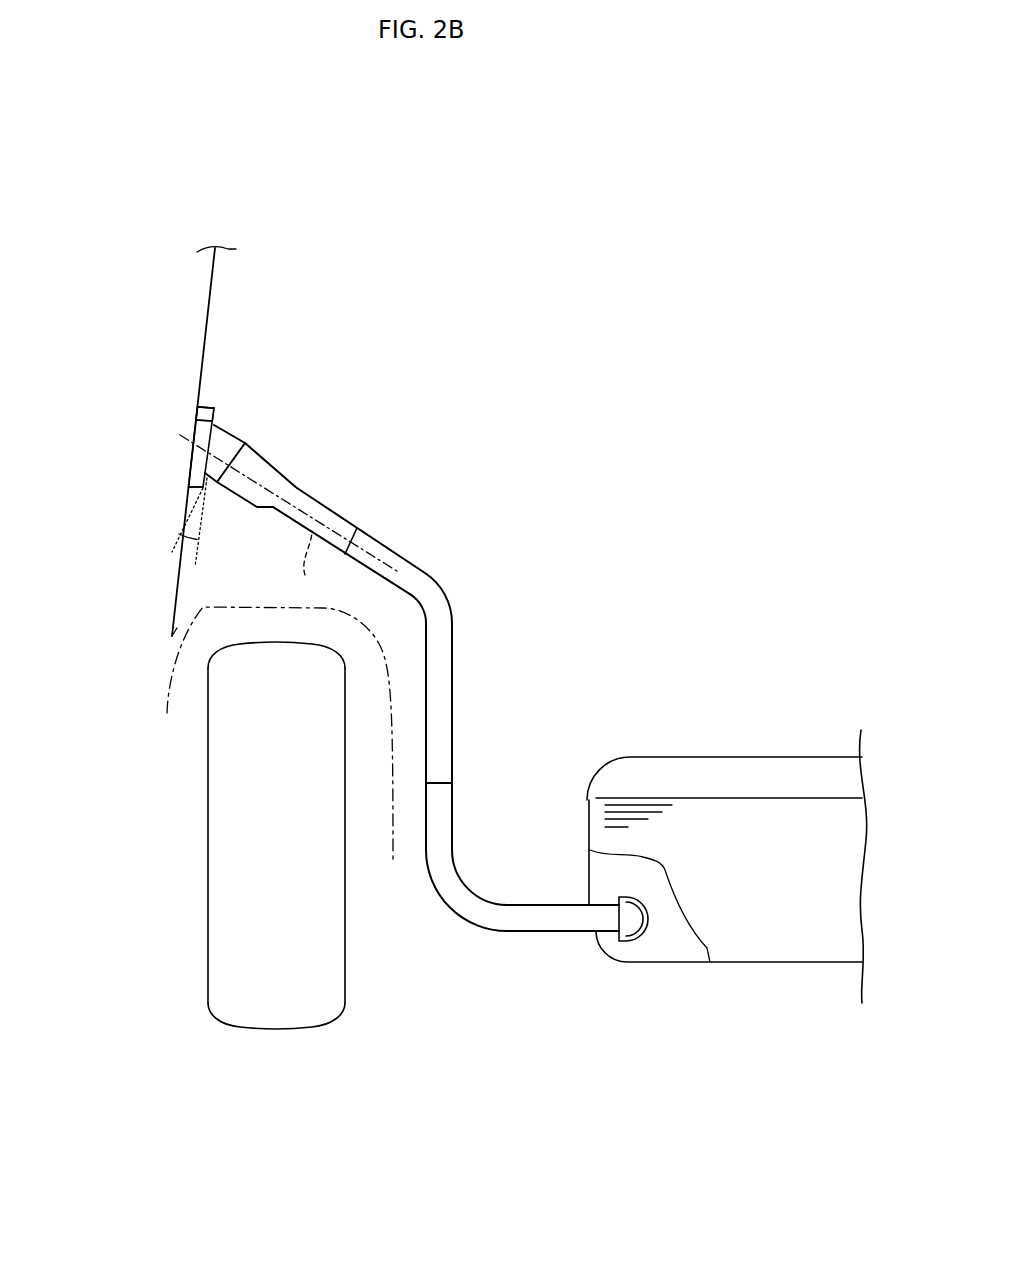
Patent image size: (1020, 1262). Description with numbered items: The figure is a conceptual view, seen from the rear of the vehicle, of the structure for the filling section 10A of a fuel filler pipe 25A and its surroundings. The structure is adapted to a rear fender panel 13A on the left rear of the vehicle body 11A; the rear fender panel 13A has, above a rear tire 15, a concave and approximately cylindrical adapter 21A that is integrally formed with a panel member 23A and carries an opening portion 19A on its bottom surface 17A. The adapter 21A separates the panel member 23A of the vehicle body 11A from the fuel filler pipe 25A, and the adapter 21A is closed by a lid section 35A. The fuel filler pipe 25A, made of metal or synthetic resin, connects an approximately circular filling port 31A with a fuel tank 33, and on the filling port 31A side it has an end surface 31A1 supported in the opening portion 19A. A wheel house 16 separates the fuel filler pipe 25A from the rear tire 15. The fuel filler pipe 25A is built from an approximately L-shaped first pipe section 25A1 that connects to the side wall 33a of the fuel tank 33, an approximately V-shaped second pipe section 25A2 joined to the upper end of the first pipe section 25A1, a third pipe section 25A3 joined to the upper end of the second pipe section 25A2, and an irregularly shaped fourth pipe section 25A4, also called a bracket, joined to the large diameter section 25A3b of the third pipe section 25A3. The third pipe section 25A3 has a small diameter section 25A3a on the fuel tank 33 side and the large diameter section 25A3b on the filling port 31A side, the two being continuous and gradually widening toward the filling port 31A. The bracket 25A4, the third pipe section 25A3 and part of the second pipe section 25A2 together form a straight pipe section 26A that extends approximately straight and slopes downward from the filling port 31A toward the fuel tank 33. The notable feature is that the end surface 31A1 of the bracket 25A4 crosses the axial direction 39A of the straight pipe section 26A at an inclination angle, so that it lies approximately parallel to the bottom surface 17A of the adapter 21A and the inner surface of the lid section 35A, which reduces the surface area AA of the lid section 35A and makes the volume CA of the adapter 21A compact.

The vehicle body 11A is at (465, 241).
The structure for the filling section 10A is at (323, 343).
The rear fender panel 13A is at (217, 283).
The panel member 23A is at (207, 320).
The opening portion 19A is at (194, 412).
The adapter 21A is at (202, 406).
The bottom surface 17A is at (213, 410).
The filling port 31A is at (190, 458).
The end surface 31A1 is at (205, 481).
The volume of the adapter CA is at (200, 452).
The lid section 35A is at (195, 438).
The surface area of the lid section AA is at (201, 522).
The straight pipe section 26A is at (450, 561).
The fuel filler pipe 25A is at (492, 575).
The fourth pipe section 25A4 is at (233, 430).
The large diameter section 25A3b is at (237, 498).
The third pipe section 25A3 is at (313, 500).
The small diameter section 25A3a is at (351, 526).
The axial direction 39A is at (314, 567).
The second pipe section 25A2 is at (453, 647).
The first pipe section 25A1 is at (500, 912).
The wheel house 16 is at (275, 733).
The rear tire 15 is at (315, 1003).
The fuel tank 33 is at (805, 756).
The side wall 33a is at (670, 944).